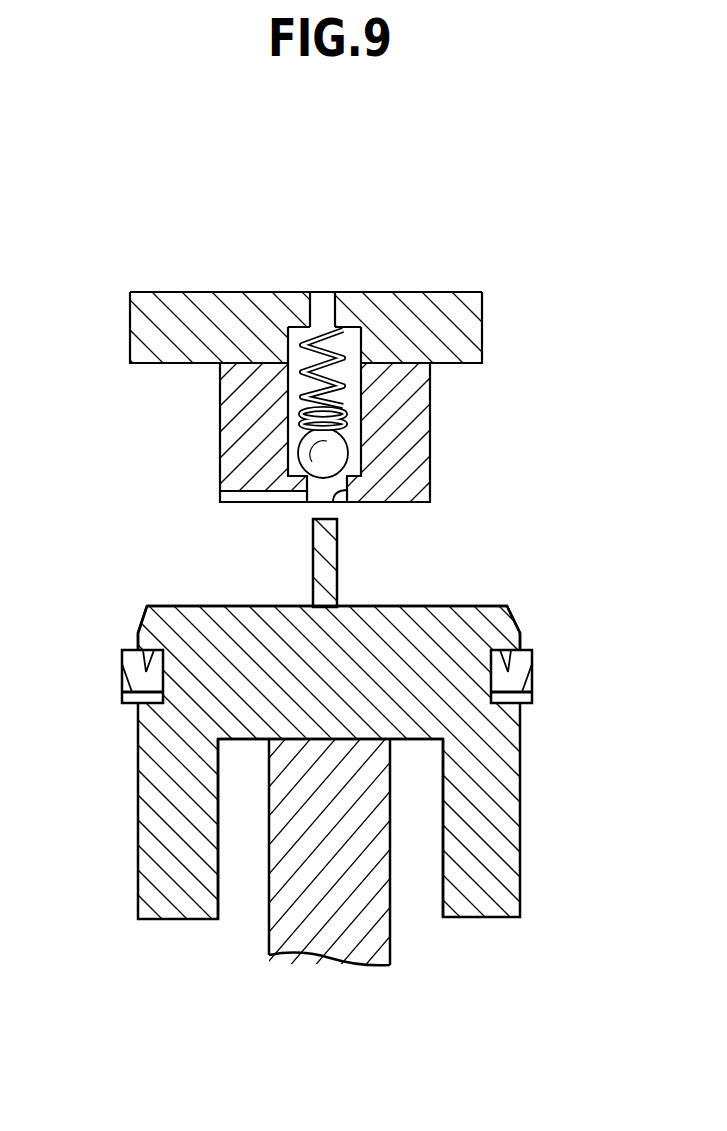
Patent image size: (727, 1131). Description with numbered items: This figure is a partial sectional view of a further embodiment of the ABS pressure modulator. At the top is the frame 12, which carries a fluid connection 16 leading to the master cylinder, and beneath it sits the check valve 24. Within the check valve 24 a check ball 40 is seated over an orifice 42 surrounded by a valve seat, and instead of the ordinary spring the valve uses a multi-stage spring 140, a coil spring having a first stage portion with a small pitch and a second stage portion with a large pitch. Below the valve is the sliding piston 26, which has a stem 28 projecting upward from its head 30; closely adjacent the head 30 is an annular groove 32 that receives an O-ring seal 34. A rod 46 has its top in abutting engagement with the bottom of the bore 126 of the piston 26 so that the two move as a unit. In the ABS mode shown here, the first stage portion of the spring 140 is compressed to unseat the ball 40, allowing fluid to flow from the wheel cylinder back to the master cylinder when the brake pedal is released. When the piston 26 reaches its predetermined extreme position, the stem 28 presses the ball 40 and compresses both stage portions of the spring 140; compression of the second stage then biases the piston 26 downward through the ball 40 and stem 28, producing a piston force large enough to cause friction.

The frame 12 is at (212, 292).
The fluid connection 16 is at (322, 299).
The multi-stage spring 140 is at (358, 390).
The check valve 24 is at (440, 425).
The check ball 40 is at (278, 500).
The orifice 42 is at (333, 503).
The stem 28 is at (338, 556).
The head 30 is at (462, 607).
The sliding piston 26 is at (522, 762).
The O-ring seal 34 is at (122, 670).
The annular groove 32 is at (534, 677).
The bore 126 is at (432, 815).
The rod 46 is at (390, 882).